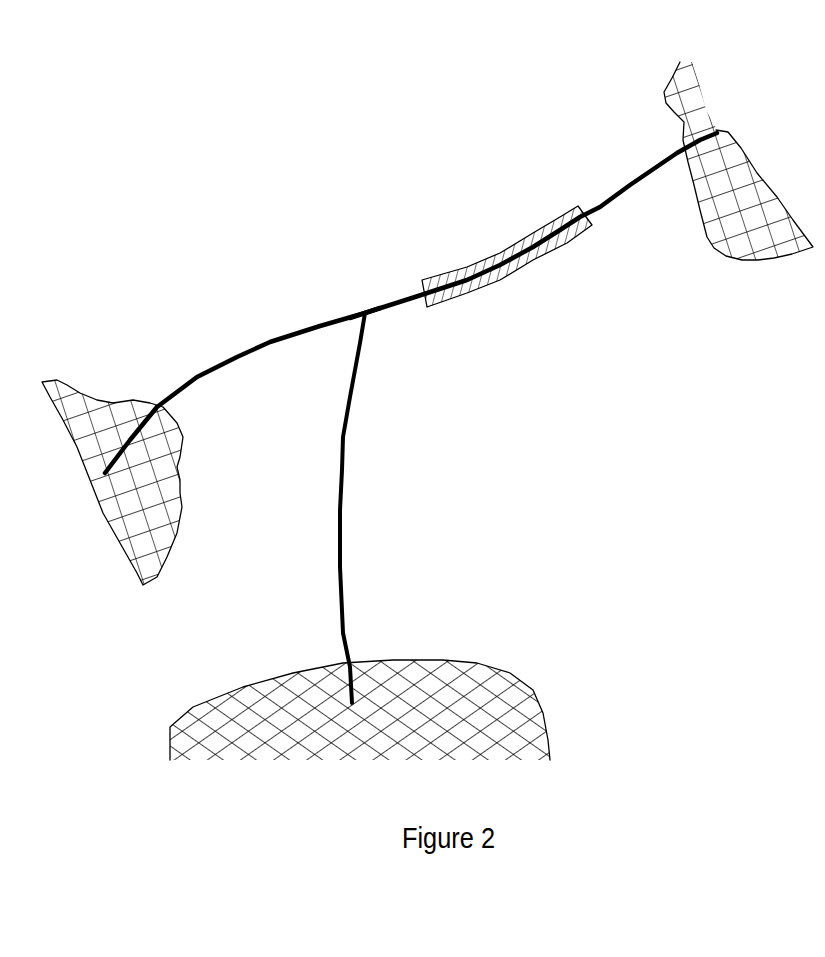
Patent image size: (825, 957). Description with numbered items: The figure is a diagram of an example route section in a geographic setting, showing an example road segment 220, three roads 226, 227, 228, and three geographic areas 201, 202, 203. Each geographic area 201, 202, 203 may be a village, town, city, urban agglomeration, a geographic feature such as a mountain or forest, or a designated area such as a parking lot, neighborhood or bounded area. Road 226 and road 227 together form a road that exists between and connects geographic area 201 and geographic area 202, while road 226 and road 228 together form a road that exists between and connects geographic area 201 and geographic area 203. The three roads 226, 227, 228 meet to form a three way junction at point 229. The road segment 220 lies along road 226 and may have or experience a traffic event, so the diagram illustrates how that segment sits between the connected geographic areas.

The geographic area 201 is at (757, 262).
The geographic area 202 is at (182, 505).
The geographic area 203 is at (483, 663).
The road segment 220 is at (483, 265).
The road 226 is at (630, 185).
The road 227 is at (254, 348).
The road 228 is at (345, 471).
The point 229 is at (363, 313).